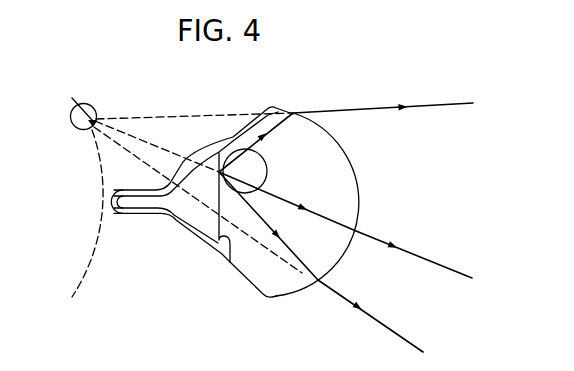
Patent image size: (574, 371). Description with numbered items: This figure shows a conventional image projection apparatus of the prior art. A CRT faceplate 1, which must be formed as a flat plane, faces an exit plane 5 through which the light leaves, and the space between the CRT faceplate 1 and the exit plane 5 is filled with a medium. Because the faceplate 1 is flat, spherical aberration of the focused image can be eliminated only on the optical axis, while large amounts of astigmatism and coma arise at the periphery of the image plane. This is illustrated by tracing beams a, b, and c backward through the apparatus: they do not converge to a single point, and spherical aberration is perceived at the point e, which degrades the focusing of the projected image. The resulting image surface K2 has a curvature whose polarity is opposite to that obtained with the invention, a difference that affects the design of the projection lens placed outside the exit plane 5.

The CRT faceplate 1 is at (222, 243).
The exit plane 5 is at (361, 185).
The image surface K2 is at (92, 260).
The point e is at (87, 105).
The beam a is at (346, 126).
The beam b is at (345, 225).
The beam c is at (321, 262).